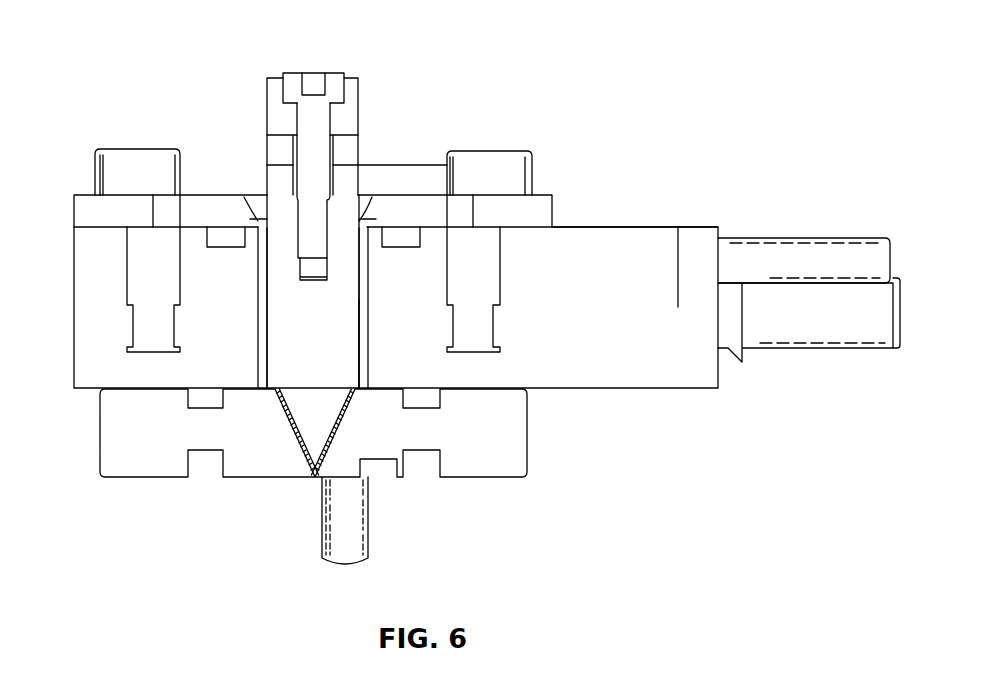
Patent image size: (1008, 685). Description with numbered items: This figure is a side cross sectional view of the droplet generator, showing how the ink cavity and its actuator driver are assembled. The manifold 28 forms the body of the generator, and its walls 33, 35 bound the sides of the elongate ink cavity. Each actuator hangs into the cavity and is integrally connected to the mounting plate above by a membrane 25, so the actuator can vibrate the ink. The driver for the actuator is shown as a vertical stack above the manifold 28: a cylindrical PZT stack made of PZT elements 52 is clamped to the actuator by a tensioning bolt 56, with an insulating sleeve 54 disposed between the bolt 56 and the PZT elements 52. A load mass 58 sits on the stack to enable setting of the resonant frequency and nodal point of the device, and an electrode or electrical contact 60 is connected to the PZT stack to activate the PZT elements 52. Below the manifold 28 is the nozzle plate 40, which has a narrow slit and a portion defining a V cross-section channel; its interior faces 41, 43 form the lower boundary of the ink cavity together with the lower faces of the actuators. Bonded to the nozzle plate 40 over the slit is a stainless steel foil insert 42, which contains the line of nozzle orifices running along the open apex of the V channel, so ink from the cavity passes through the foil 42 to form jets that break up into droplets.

The membrane 25 is at (263, 220).
The manifold 28 is at (102, 245).
The wall of the cavity 33 is at (280, 327).
The wall of the cavity 35 is at (352, 337).
The nozzle plate 40 is at (113, 427).
The interior face 41 is at (293, 435).
The foil insert 42 is at (313, 478).
The interior face 43 is at (343, 427).
The PZT elements 52 is at (349, 162).
The insulating sleeve 54 is at (293, 143).
The tensioning bolt 56 is at (333, 80).
The load mass 58 is at (362, 105).
The electrical contact 60 is at (348, 147).